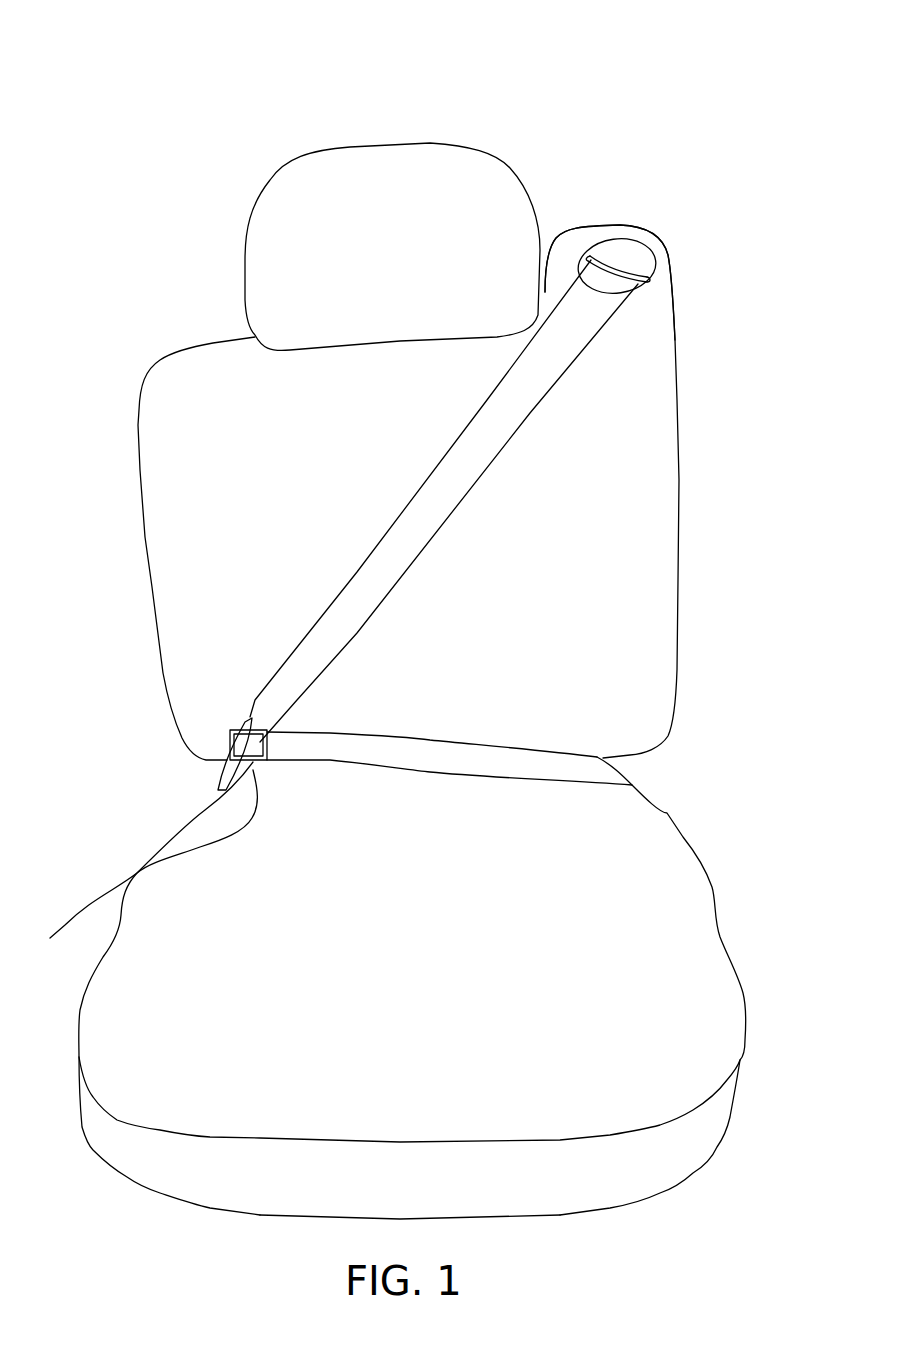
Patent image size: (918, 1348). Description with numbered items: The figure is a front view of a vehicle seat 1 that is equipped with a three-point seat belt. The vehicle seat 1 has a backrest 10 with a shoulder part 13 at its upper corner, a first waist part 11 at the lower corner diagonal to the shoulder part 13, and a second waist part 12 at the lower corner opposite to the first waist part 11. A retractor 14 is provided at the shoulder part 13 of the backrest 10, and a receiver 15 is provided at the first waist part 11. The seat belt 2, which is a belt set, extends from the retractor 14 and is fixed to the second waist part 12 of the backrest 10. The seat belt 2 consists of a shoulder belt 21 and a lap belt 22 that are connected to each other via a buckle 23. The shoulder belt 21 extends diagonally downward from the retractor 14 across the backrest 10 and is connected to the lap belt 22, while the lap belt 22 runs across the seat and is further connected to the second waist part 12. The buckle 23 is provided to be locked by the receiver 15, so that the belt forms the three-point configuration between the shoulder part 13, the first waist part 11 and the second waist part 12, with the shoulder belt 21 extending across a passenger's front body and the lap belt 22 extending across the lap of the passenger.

The vehicle seat 1 is at (648, 90).
The backrest 10 is at (653, 453).
The first waist part 11 is at (240, 717).
The second waist part 12 is at (637, 770).
The shoulder part 13 is at (667, 238).
The retractor 14 is at (617, 250).
The receiver 15 is at (230, 778).
The seat belt 2 is at (775, 532).
The shoulder belt 21 is at (437, 494).
The lap belt 22 is at (435, 758).
The buckle 23 is at (141, 866).